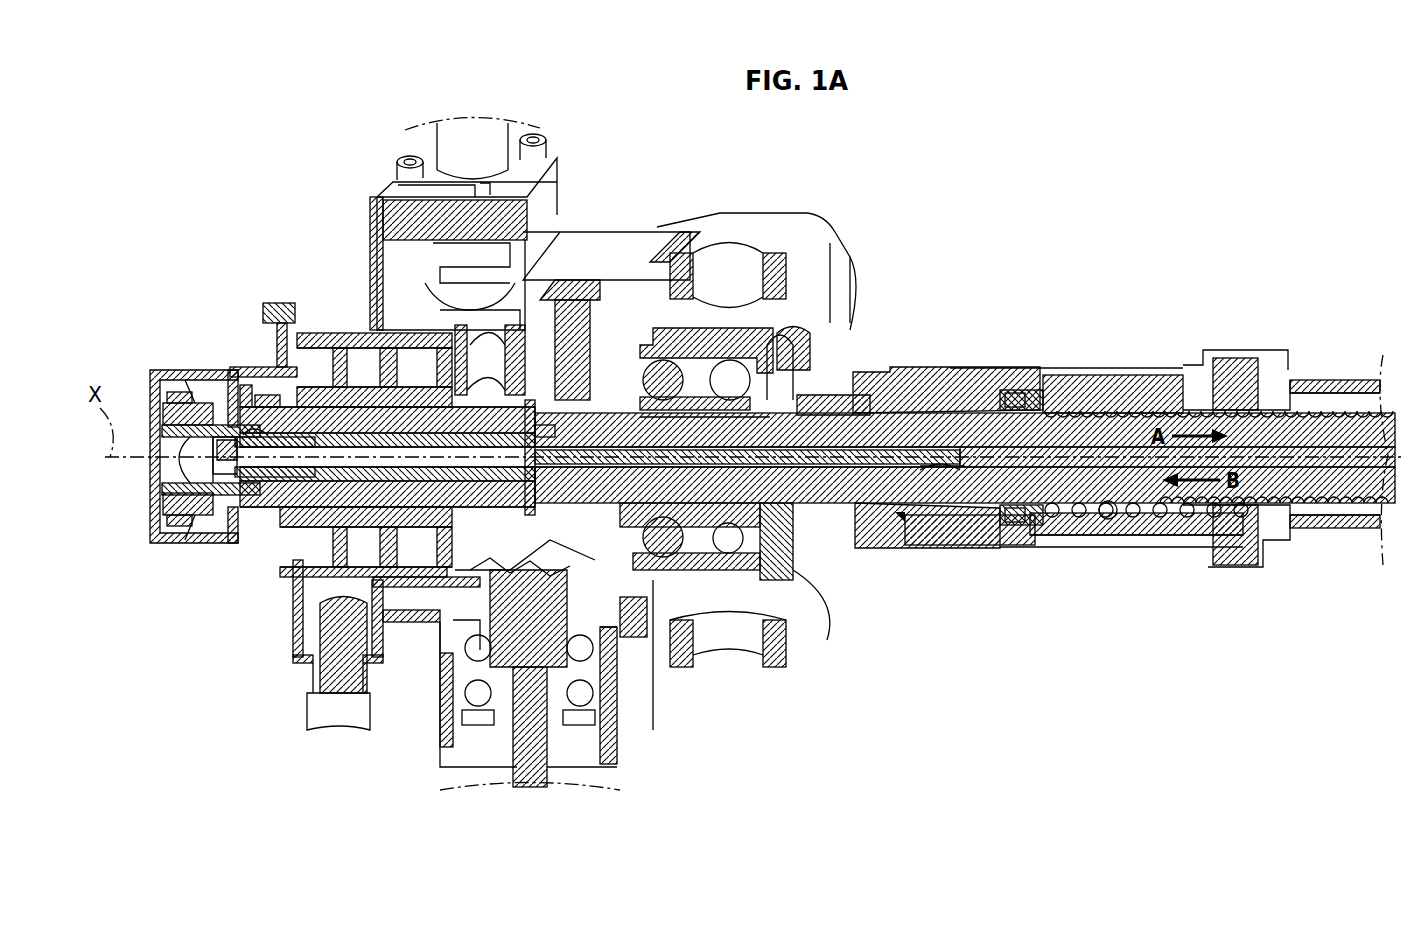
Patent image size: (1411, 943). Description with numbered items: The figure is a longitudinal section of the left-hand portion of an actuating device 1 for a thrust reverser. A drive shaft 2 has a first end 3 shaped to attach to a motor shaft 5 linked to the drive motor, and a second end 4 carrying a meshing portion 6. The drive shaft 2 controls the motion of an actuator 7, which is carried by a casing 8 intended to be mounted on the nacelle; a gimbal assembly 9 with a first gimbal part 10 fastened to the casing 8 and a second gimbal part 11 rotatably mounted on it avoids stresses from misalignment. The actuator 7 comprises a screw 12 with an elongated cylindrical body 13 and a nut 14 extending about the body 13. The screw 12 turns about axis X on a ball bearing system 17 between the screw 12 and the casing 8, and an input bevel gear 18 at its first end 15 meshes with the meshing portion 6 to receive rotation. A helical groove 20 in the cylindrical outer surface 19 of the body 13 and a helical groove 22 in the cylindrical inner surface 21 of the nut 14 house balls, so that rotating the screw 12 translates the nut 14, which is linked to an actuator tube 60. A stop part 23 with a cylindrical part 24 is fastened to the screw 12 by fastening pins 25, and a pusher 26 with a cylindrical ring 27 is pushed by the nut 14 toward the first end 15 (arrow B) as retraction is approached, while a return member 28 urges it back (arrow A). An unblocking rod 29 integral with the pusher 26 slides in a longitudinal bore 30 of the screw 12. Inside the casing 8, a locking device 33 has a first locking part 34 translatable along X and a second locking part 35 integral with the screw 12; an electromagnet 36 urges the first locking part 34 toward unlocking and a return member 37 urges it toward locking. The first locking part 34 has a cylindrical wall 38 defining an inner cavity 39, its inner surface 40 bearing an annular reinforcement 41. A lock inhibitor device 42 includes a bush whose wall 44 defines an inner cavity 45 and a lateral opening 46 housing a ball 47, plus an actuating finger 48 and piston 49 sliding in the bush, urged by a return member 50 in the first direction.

The actuating device 1 is at (880, 153).
The drive shaft 2 is at (525, 620).
The first end 3 is at (480, 740).
The second end 4 is at (490, 595).
The motor shaft 5 is at (540, 725).
The meshing portion 6 is at (580, 630).
The actuator 7 is at (922, 342).
The casing 8 is at (620, 243).
The gimbal assembly 9 is at (850, 250).
The first gimbal part 10 is at (810, 345).
The second gimbal part 11 is at (800, 225).
The screw 12 is at (830, 515).
The body 13 is at (1085, 405).
The nut 14 is at (1075, 530).
The first end 15 is at (730, 535).
The ball bearing system 17 is at (780, 565).
The input bevel gear 18 is at (655, 350).
The cylindrical outer surface 19 is at (1352, 530).
The helical groove 20 is at (1320, 528).
The cylindrical inner surface 21 is at (1108, 520).
The helical groove 22 is at (1146, 510).
The stop part 23 is at (900, 375).
The cylindrical part 24 is at (885, 545).
The fastening pins 25 is at (1010, 392).
The pusher 26 is at (1012, 392).
The cylindrical ring 27 is at (930, 540).
The return member 28 is at (895, 520).
The unblocking rod 29 is at (940, 470).
The longitudinal bore 30 is at (812, 440).
The locking device 33 is at (355, 400).
The first locking part 34 is at (300, 500).
The second locking part 35 is at (560, 355).
The electromagnet 36 is at (290, 400).
The return member 37 is at (500, 390).
The cylindrical wall 38 is at (345, 490).
The inner cavity 39 is at (315, 375).
The inner surface 40 is at (340, 480).
The annular reinforcement 41 is at (290, 490).
The lock inhibitor device 42 is at (220, 420).
The wall 44 is at (210, 415).
The inner cavity 45 is at (275, 400).
The lateral opening 46 is at (248, 395).
The ball 47 is at (258, 430).
The actuating finger 48 is at (160, 500).
The piston 49 is at (235, 480).
The return member 50 is at (228, 470).
The actuator tube 60 is at (1378, 530).